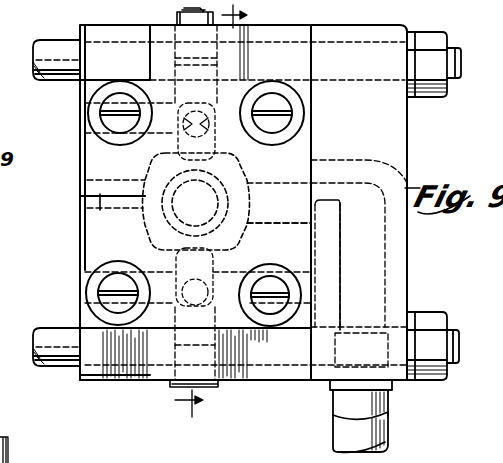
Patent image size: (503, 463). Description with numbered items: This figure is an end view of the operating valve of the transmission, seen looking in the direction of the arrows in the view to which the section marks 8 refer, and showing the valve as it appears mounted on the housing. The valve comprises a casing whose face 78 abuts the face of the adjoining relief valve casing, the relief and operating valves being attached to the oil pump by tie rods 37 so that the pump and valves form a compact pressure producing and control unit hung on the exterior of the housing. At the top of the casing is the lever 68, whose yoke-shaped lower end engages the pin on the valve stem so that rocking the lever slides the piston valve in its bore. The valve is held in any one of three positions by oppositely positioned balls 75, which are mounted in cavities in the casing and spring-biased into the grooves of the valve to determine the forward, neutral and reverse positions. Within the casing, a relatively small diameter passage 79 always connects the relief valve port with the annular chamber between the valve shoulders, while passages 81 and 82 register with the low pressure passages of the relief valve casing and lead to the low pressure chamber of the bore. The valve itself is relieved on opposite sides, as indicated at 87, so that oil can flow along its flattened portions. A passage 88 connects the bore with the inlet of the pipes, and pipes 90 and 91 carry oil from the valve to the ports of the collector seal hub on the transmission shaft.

The lever 68 is at (175, 15).
The figure 8 section reference 8 is at (216, 211).
The tie rods 37 is at (66, 82).
The balls 75 is at (213, 152).
The relieved portion of valve 87 is at (87, 181).
The passage 81 is at (182, 133).
The passage 82 is at (150, 267).
The passage 79 is at (98, 209).
The face of the casing 78 is at (80, 255).
The passage 88 is at (280, 224).
The pipe 90 is at (388, 396).
The pipe 91 is at (388, 433).